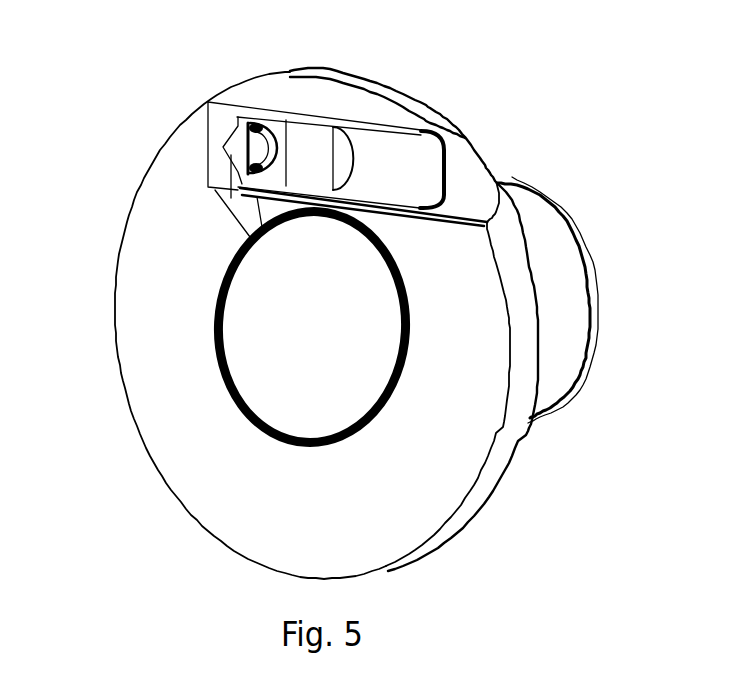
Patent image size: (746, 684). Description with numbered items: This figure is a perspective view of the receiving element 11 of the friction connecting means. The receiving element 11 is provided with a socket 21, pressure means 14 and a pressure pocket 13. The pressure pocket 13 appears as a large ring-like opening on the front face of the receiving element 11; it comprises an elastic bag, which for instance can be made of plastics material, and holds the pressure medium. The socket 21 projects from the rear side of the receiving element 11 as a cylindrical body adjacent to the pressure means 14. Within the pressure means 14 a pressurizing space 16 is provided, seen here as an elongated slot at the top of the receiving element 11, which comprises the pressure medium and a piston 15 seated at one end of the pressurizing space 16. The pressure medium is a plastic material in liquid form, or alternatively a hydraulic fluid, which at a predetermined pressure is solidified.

The receiving element 11 is at (460, 88).
The pressure pocket 13 is at (220, 296).
The pressure means 14 is at (494, 178).
The piston 15 is at (297, 137).
The pressurizing space 16 is at (403, 150).
The socket 21 is at (568, 257).